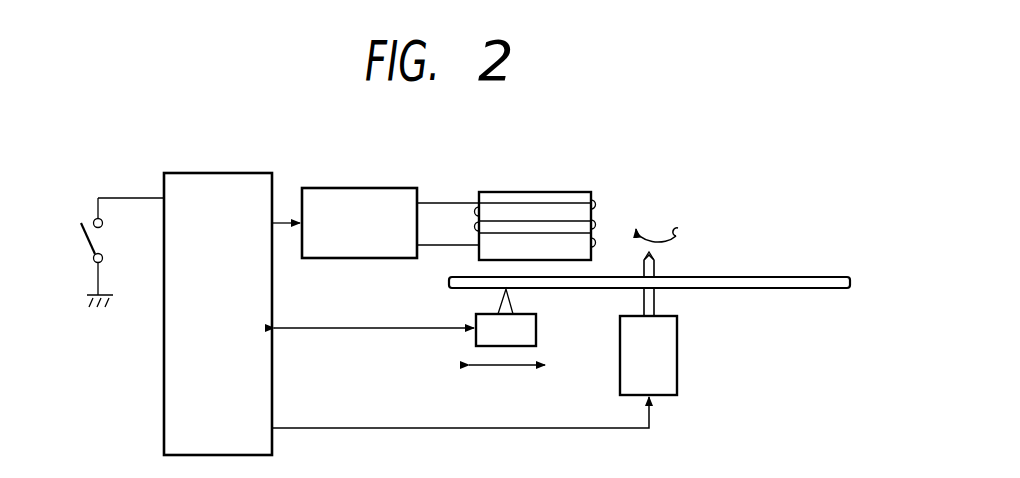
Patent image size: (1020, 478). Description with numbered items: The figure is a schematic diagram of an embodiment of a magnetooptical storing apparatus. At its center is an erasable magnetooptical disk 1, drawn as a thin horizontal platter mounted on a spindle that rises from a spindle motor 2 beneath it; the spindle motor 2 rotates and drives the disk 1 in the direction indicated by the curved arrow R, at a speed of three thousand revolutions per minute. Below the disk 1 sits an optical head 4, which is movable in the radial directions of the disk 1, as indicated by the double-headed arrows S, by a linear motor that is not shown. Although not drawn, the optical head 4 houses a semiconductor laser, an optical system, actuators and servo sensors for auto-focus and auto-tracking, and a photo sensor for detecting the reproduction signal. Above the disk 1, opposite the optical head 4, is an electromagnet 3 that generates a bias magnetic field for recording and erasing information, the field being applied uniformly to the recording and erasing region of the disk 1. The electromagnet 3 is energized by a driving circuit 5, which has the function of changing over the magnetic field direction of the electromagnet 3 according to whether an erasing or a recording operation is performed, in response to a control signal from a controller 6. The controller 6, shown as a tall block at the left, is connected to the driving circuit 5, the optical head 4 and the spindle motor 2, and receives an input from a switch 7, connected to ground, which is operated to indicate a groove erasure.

The magnetooptical disk 1 is at (740, 280).
The spindle motor 2 is at (668, 357).
The electromagnet 3 is at (548, 195).
The optical head 4 is at (523, 328).
The driving circuit 5 is at (387, 188).
The controller 6 is at (253, 173).
The switch 7 is at (88, 238).
The rotation direction arrow R is at (668, 237).
The radial direction arrows S is at (502, 367).